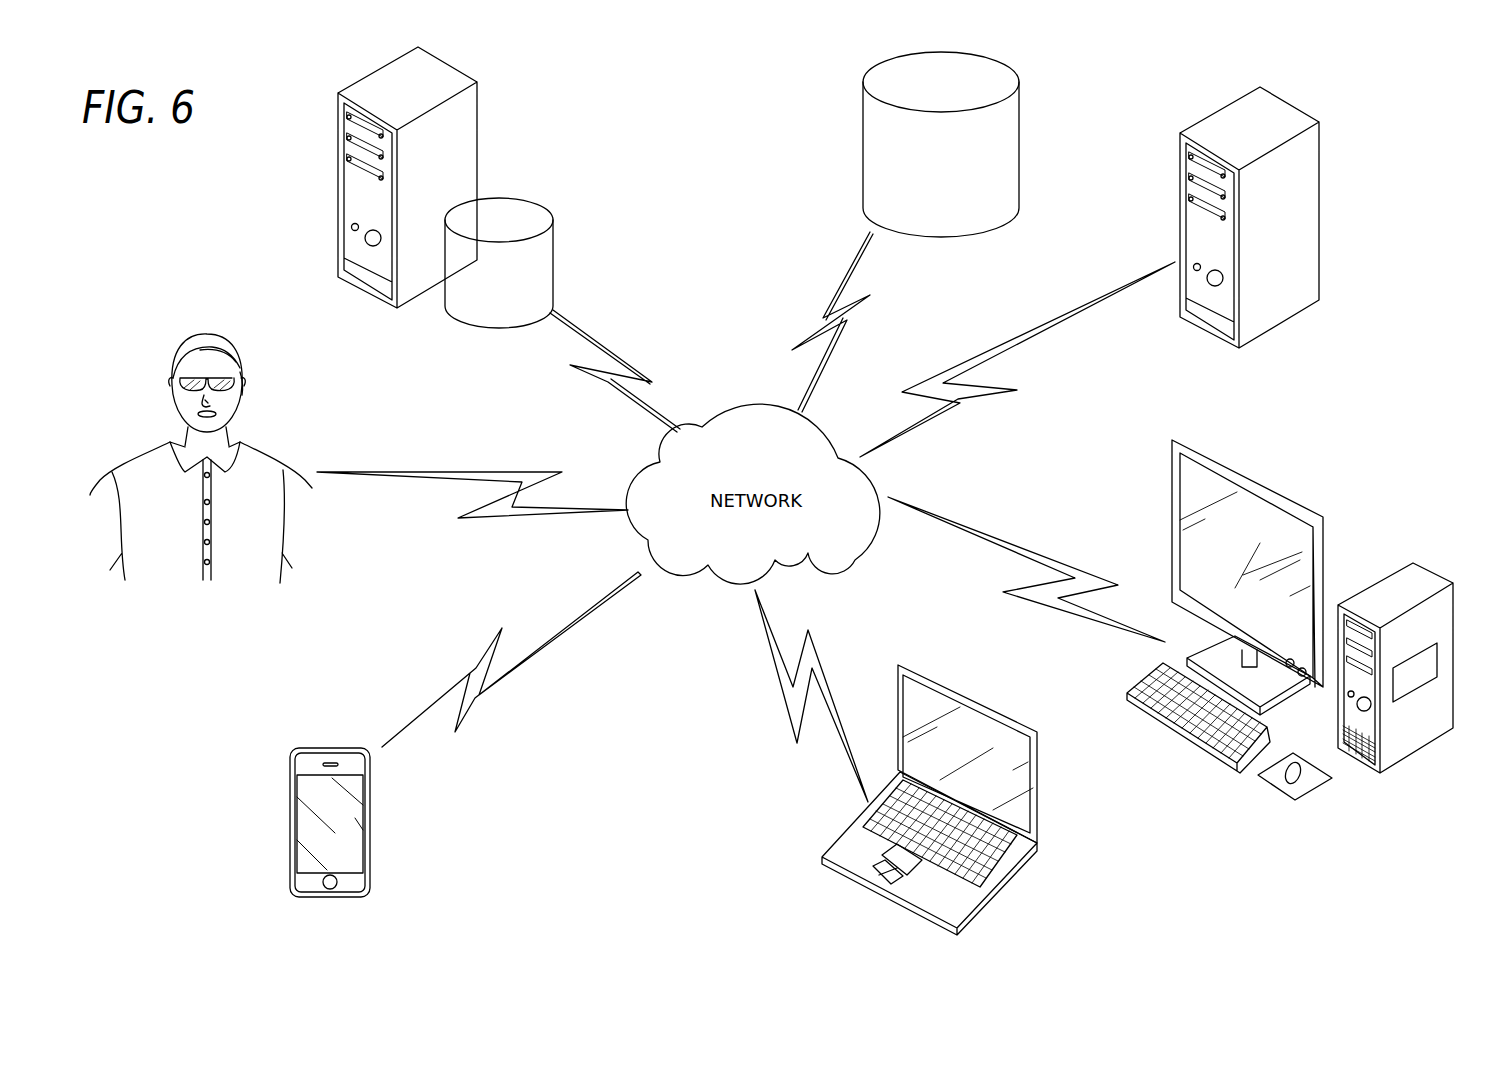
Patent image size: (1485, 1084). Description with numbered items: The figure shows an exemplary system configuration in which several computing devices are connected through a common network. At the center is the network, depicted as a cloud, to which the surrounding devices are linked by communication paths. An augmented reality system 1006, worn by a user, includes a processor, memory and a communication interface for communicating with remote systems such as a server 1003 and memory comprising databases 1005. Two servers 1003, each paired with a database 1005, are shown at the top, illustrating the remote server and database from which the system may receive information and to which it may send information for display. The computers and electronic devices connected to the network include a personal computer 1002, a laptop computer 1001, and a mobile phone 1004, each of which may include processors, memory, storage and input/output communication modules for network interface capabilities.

The laptop computer 1001 is at (1017, 882).
The personal computer 1002 is at (1353, 603).
The server 1003 is at (338, 185).
The mobile phone 1004 is at (293, 813).
The database 1005 is at (512, 222).
The augmented reality system 1006 is at (177, 398).